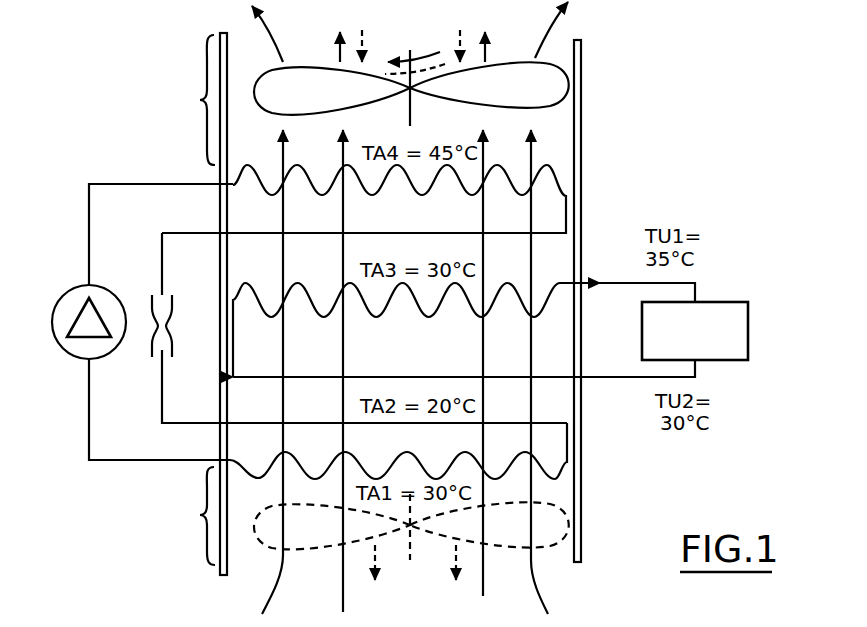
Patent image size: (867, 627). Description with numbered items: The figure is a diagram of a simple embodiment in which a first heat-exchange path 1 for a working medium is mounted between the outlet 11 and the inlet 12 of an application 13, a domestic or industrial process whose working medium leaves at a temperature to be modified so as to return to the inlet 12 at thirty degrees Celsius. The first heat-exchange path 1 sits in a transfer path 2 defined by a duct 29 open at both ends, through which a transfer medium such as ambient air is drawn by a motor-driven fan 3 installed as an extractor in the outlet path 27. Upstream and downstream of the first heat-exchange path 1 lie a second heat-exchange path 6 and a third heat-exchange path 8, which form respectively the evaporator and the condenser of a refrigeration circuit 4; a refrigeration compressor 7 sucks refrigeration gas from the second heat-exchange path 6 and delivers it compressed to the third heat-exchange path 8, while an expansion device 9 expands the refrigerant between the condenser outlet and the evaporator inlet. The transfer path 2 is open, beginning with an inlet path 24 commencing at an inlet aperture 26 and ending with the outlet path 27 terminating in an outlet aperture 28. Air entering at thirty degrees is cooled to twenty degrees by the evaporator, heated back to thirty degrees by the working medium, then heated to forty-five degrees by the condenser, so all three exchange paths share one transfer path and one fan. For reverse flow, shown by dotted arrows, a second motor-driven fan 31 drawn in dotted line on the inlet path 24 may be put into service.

The first heat-exchange path 1 is at (400, 326).
The transfer path 2 is at (260, 553).
The motor-driven fan 3 is at (560, 108).
The refrigeration circuit 4 is at (90, 466).
The second heat-exchange path 6 is at (576, 466).
The refrigeration compressor 7 is at (65, 352).
The third heat-exchange path 8 is at (562, 165).
The expansion device 9 is at (176, 296).
The outlet of the application 11 is at (700, 300).
The inlet of the application 12 is at (700, 362).
The application 13 is at (695, 331).
The inlet path 24 is at (186, 516).
The inlet aperture 26 is at (545, 556).
The outlet path 27 is at (185, 100).
The outlet aperture 28 is at (248, 40).
The duct 29 is at (222, 210).
The second motor-driven fan 31 is at (583, 530).